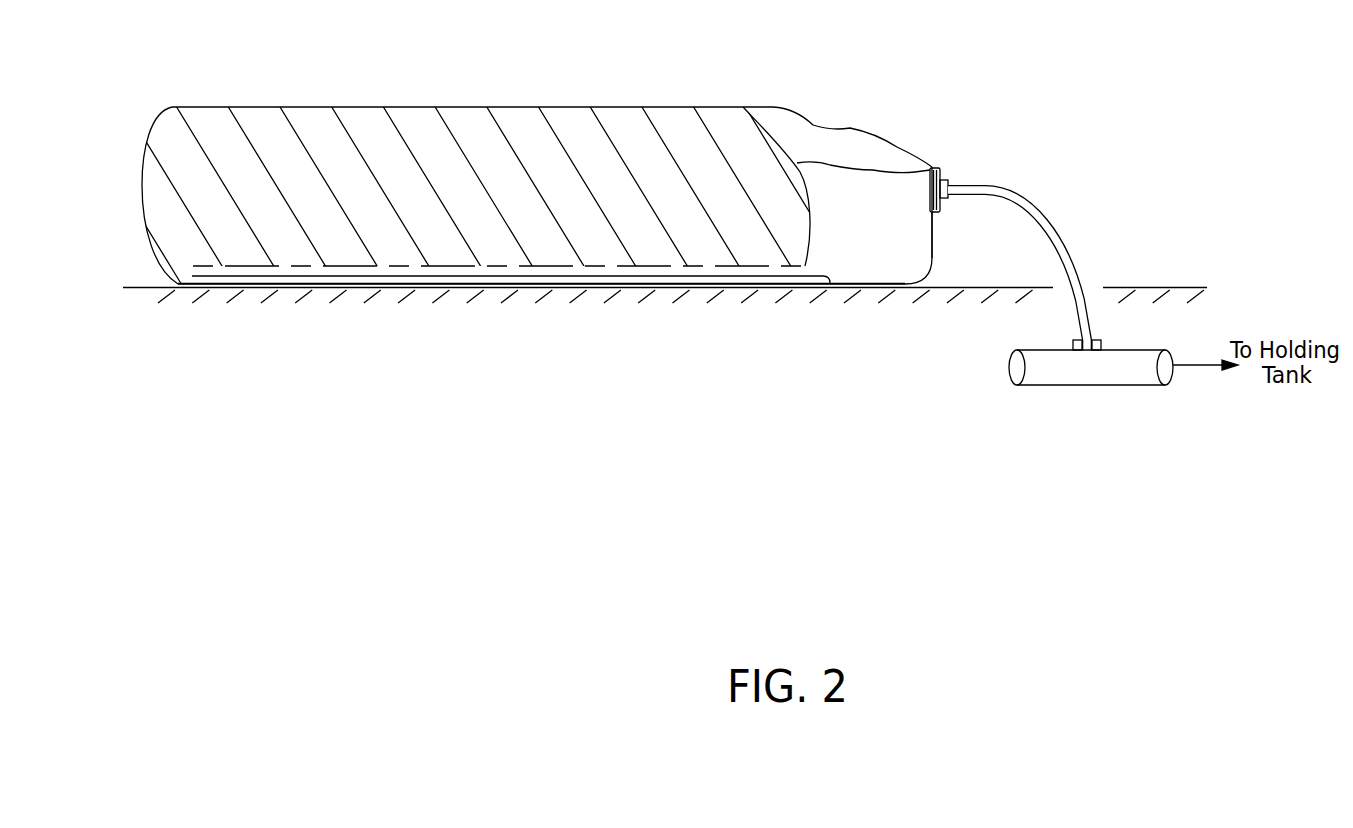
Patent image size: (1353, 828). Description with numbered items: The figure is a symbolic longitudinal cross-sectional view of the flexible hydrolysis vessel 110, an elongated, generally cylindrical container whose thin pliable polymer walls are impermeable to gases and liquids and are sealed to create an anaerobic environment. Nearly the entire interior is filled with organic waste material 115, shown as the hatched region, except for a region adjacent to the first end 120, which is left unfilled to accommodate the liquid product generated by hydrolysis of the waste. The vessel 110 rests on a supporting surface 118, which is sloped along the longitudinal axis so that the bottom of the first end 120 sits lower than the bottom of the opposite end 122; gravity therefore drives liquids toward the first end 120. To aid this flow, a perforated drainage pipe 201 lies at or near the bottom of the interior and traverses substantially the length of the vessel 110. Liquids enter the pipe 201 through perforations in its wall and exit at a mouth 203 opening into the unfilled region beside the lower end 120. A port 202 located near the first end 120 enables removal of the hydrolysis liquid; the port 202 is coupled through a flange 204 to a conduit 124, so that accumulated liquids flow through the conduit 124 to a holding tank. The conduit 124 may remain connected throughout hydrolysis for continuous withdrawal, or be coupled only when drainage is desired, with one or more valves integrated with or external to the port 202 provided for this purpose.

The flexible hydrolysis vessel 110 is at (317, 107).
The organic waste material 115 is at (483, 148).
The opposite end of the vessel 122 is at (142, 202).
The supporting surface 118 is at (352, 286).
The perforated drainage pipe 201 is at (487, 277).
The mouth 203 is at (828, 284).
The first end of the vessel 120 is at (932, 259).
The port 202 is at (937, 167).
The flange 204 is at (970, 196).
The conduit 124 is at (1028, 202).